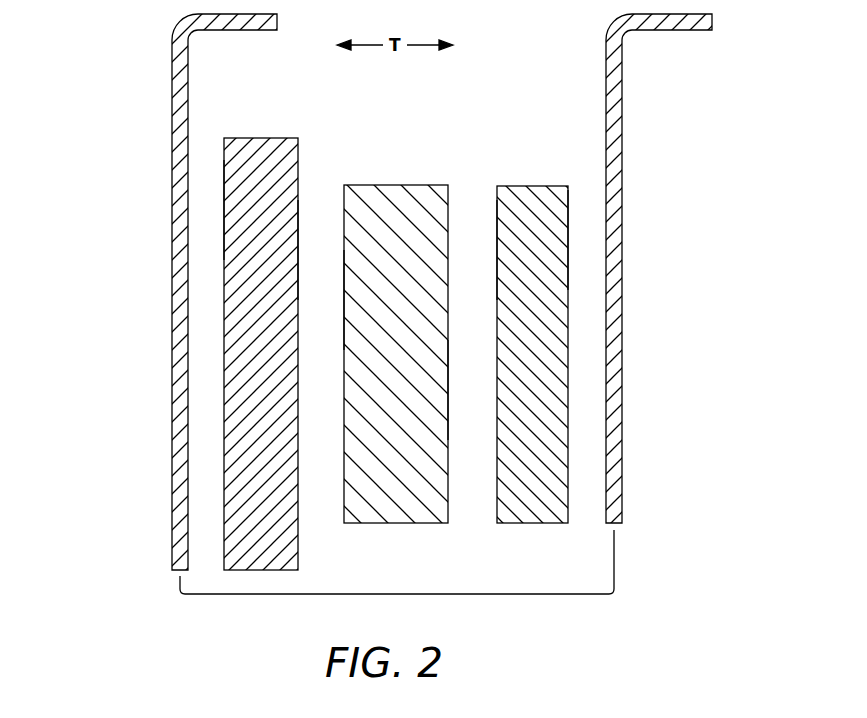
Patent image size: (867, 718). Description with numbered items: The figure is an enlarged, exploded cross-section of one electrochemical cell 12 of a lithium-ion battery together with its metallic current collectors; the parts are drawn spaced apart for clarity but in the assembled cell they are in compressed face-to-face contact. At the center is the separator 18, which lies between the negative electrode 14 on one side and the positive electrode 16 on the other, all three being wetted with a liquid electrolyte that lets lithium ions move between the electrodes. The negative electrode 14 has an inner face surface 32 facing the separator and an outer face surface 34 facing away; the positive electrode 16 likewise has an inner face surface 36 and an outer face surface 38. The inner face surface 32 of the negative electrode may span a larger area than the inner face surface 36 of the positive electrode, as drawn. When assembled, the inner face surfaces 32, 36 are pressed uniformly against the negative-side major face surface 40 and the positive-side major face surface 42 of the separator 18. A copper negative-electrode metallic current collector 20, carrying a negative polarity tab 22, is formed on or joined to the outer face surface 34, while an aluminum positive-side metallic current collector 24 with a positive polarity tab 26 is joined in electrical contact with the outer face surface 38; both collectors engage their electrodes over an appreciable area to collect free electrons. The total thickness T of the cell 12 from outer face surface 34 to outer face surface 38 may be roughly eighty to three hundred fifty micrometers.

The electrochemical cell 12 is at (397, 594).
The negative electrode 14 is at (262, 138).
The positive electrode 16 is at (531, 186).
The separator 18 is at (396, 185).
The negative-electrode metallic current collector 20 is at (172, 298).
The negative polarity tab 22 is at (172, 89).
The positive-side metallic current collector 24 is at (622, 290).
The positive polarity tab 26 is at (618, 88).
The inner face surface of the negative electrode 32 is at (298, 250).
The outer face surface of the negative electrode 34 is at (224, 206).
The inner face surface of the positive electrode 36 is at (497, 250).
The outer face surface of the positive electrode 38 is at (568, 230).
The negative-side major face surface of the separator 40 is at (344, 301).
The positive-side major face surface of the separator 42 is at (448, 390).